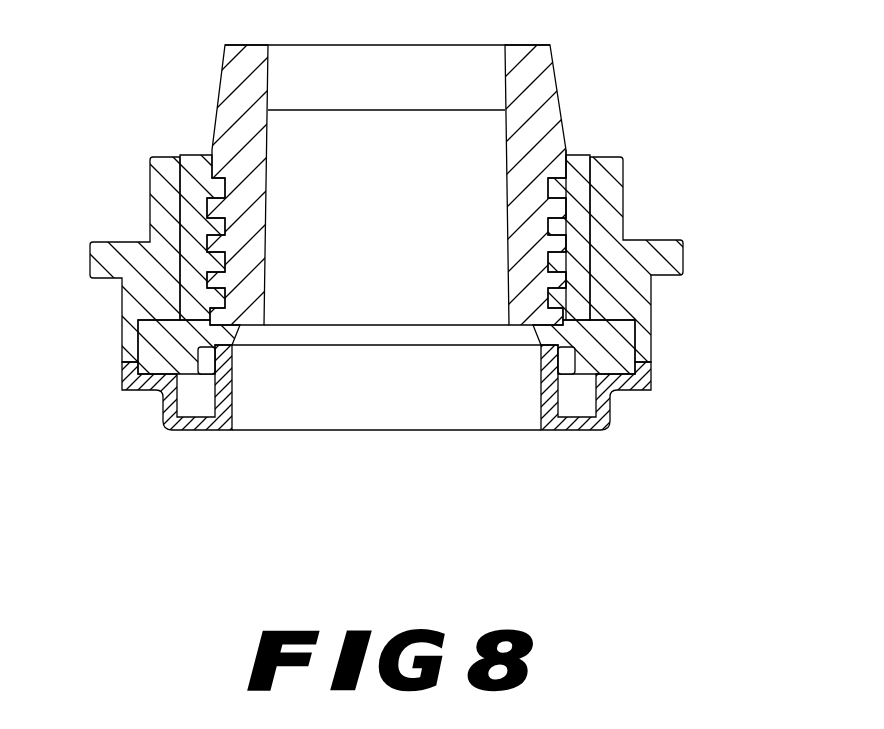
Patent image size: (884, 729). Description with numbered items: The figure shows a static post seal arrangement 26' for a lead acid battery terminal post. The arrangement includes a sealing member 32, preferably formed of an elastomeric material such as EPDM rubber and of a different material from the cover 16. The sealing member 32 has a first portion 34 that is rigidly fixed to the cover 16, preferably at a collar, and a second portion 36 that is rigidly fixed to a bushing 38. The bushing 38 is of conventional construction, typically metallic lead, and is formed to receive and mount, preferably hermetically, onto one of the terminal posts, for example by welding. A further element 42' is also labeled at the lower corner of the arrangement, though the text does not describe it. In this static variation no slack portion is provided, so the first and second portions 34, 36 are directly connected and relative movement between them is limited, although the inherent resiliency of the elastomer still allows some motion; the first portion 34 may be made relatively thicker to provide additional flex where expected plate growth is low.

The bushing 38 is at (215, 108).
The second portion 36 is at (147, 240).
The sealing member 32 is at (600, 235).
The cover 16 is at (674, 276).
The first portion 34 is at (636, 388).
The bottom cap 42' is at (386, 444).
The static sealing arrangement 26' is at (386, 405).